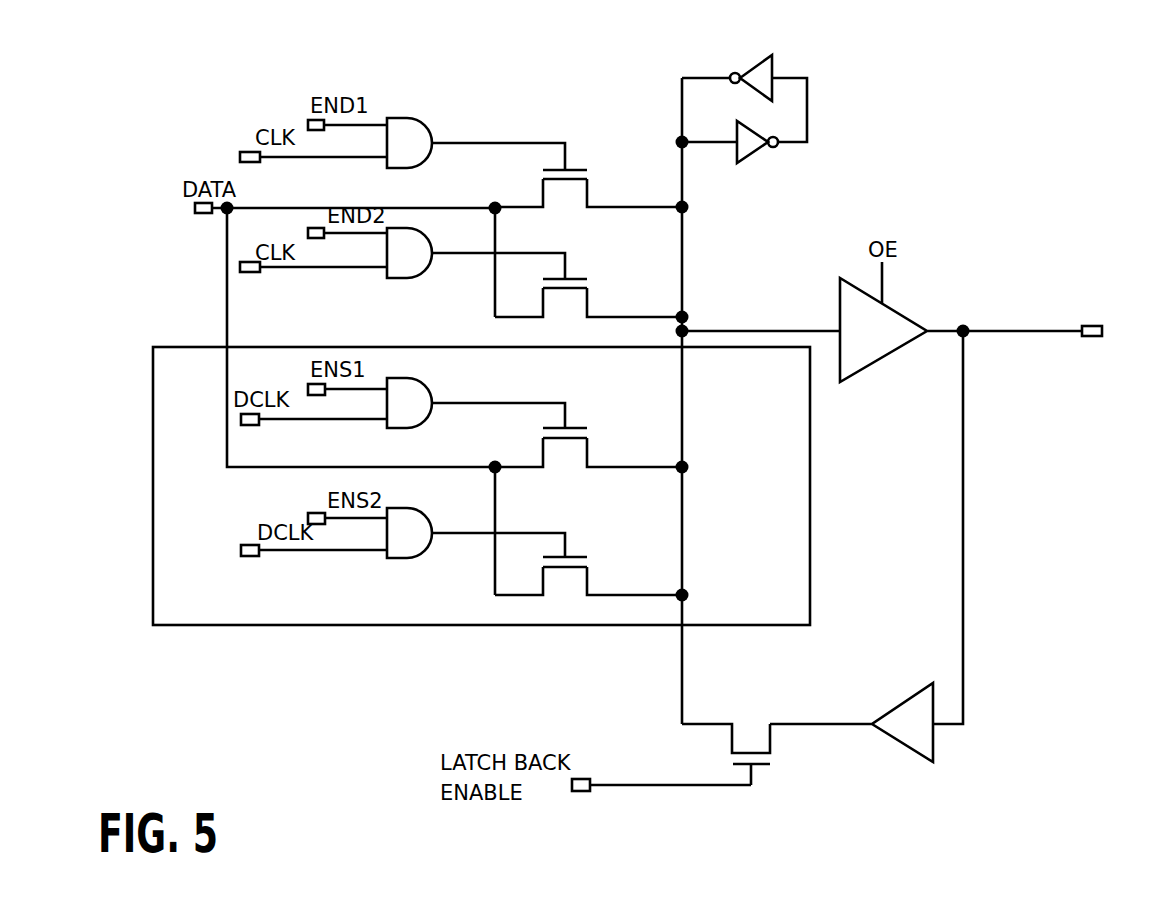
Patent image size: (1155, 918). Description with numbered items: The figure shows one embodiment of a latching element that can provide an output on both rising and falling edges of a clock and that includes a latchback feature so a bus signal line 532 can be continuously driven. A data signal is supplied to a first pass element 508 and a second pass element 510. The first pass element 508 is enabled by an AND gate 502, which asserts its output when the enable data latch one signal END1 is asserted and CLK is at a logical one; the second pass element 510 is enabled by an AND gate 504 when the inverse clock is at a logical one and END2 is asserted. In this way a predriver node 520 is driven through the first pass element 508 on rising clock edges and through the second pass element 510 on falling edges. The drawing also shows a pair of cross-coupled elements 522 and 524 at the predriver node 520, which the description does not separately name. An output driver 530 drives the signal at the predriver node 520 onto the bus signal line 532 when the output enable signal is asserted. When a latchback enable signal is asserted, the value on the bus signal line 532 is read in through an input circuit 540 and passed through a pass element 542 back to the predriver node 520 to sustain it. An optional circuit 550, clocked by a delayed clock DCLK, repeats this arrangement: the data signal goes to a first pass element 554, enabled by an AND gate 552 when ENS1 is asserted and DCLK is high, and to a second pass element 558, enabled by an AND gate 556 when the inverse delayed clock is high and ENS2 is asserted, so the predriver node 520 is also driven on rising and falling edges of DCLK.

The AND gate 502 is at (412, 120).
The AND gate 504 is at (416, 274).
The first pass element 508 is at (589, 170).
The second pass element 510 is at (615, 270).
The predriver node 520 is at (687, 310).
The inverter 522 is at (768, 52).
The inverter 524 is at (754, 157).
The output driver 530 is at (873, 363).
The bus signal line 532 is at (1088, 318).
The input circuit 540 is at (915, 752).
The pass element 542 is at (752, 713).
The circuit 550 is at (792, 618).
The AND gate 552 is at (425, 381).
The first pass element 554 is at (590, 430).
The AND gate 556 is at (413, 508).
The second pass element 558 is at (590, 559).